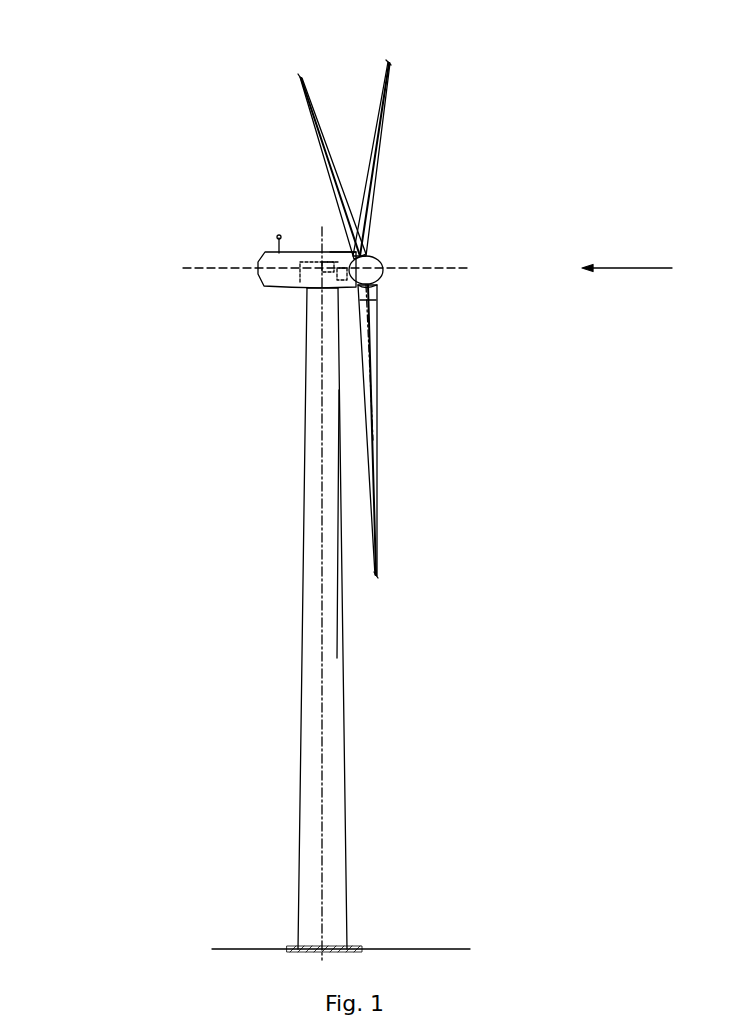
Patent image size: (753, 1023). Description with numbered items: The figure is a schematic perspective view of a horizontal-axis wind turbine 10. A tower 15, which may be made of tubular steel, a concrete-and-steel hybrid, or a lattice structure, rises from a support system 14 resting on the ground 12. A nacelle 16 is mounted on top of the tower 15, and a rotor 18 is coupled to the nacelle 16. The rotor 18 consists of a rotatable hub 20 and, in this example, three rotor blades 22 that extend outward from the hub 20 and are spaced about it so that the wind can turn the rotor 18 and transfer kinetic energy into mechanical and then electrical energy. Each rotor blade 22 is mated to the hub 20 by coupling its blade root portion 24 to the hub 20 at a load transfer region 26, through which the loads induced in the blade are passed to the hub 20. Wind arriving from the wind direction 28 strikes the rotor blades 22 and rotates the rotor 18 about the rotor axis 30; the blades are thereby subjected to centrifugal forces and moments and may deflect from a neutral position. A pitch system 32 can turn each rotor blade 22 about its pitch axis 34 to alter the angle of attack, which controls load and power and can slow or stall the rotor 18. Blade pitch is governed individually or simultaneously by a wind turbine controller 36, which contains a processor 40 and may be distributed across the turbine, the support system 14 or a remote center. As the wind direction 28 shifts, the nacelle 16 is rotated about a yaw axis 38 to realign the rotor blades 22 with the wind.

The wind turbine 10 is at (115, 86).
The ground 12 is at (232, 948).
The support system 14 is at (290, 948).
The tower 15 is at (317, 595).
The nacelle 16 is at (283, 288).
The rotor 18 is at (392, 186).
The hub 20 is at (384, 262).
The rotor blade 22 is at (318, 137).
The blade root portion 24 is at (375, 358).
The load transfer region 26 is at (367, 283).
The wind direction 28 is at (645, 268).
The rotor axis 30 is at (442, 268).
The pitch system 32 is at (363, 313).
The pitch axis 34 is at (298, 82).
The wind turbine controller 36 is at (320, 302).
The yaw axis 38 is at (323, 656).
The processor 40 is at (348, 250).